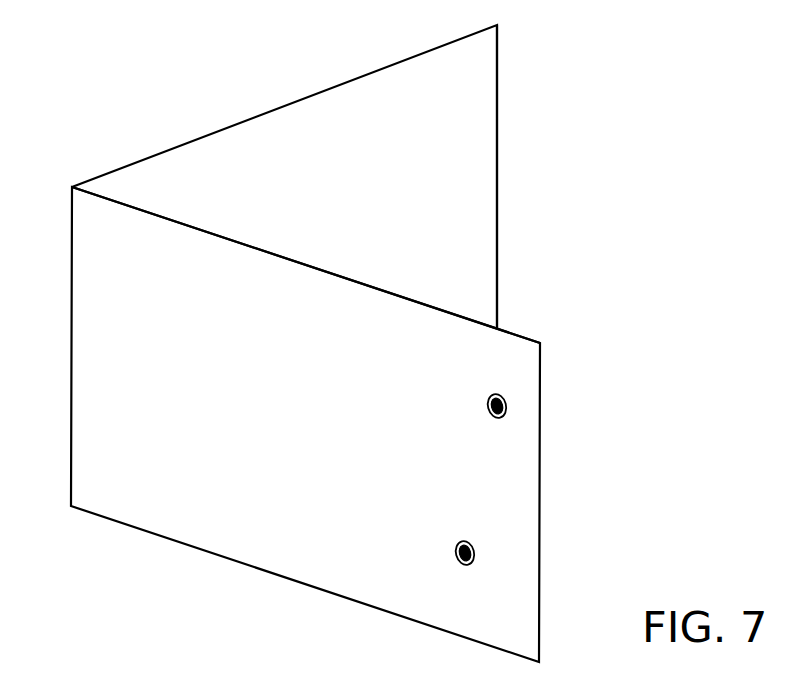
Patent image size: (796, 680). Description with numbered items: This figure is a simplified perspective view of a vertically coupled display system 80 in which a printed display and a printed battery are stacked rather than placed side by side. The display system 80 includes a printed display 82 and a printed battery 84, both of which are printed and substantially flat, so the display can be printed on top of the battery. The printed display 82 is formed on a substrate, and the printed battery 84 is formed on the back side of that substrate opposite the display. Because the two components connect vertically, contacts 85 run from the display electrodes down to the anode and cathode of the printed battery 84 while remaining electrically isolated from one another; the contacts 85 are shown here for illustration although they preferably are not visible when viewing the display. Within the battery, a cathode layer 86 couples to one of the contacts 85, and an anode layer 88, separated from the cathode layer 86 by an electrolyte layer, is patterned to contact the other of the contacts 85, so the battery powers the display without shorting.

The display system 80 is at (367, 343).
The printed display 82 is at (92, 460).
The printed battery 84 is at (270, 130).
The contacts 85 is at (505, 422).
The cathode layer 86 is at (407, 297).
The anode layer 88 is at (462, 128).